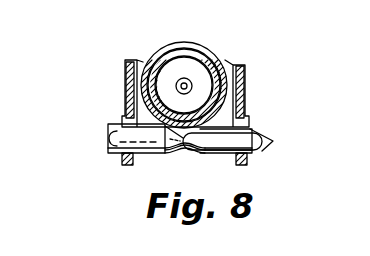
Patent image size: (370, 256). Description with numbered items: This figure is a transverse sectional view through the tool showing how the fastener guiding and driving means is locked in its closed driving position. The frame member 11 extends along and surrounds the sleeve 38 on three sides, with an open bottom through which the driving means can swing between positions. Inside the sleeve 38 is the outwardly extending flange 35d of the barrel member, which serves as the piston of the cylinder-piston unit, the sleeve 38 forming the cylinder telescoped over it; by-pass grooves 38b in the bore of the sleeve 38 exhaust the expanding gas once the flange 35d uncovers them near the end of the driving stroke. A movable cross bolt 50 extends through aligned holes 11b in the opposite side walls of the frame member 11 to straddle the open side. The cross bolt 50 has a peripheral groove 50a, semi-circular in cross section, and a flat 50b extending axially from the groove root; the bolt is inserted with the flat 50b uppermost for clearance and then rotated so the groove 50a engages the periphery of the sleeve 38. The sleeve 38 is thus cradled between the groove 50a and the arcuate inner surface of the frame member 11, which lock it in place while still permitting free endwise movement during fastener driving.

The frame member 11 is at (176, 102).
The aligned holes 11b is at (123, 164).
The sleeve 38 is at (221, 60).
The by-pass grooves 38b is at (229, 93).
The flange 35d is at (206, 82).
The cross bolt 50 is at (185, 150).
The peripheral groove 50a is at (190, 153).
The flat 50b is at (262, 130).